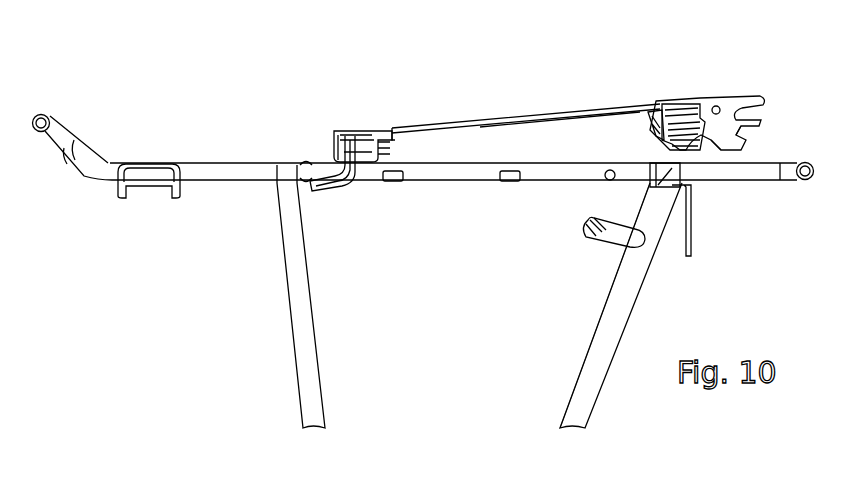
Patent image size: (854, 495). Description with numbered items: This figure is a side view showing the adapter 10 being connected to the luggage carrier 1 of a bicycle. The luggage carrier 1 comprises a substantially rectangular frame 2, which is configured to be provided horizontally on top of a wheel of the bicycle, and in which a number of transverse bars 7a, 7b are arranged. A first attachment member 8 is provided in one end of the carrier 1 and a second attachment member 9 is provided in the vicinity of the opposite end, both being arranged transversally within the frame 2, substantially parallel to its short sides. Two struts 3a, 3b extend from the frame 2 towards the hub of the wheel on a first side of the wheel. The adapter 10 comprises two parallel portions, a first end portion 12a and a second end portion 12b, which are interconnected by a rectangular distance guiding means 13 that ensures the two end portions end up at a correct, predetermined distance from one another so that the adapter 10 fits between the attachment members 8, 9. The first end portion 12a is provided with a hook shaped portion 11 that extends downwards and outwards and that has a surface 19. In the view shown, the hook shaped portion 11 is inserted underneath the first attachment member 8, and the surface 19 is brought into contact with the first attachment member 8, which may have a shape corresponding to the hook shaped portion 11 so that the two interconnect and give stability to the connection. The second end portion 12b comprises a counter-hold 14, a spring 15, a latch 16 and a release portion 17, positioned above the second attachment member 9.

The luggage carrier 1 is at (672, 276).
The frame 2 is at (261, 158).
The strut 3a is at (292, 313).
The strut 3b is at (600, 330).
The transverse bar 7a is at (508, 183).
The transverse bar 7b is at (391, 184).
The first attachment member 8 is at (288, 174).
The second attachment member 9 is at (660, 198).
The adapter 10 is at (609, 108).
The hook shaped portion 11 is at (349, 197).
The first end portion 12a is at (354, 127).
The second end portion 12b is at (686, 96).
The distance guiding means 13 is at (502, 118).
The counter-hold 14 is at (697, 135).
The spring 15 is at (668, 137).
The latch 16 is at (730, 137).
The release portion 17 is at (762, 100).
The surface 19 is at (348, 172).